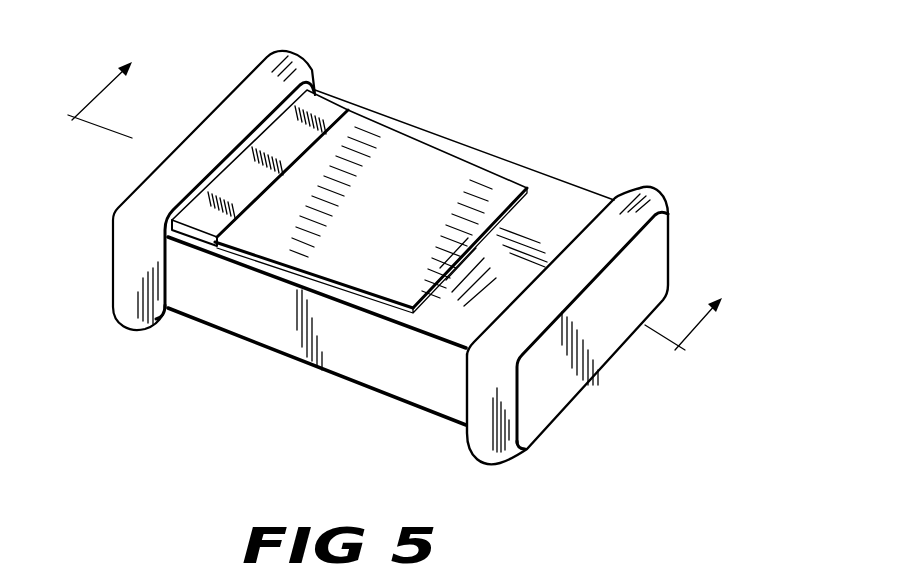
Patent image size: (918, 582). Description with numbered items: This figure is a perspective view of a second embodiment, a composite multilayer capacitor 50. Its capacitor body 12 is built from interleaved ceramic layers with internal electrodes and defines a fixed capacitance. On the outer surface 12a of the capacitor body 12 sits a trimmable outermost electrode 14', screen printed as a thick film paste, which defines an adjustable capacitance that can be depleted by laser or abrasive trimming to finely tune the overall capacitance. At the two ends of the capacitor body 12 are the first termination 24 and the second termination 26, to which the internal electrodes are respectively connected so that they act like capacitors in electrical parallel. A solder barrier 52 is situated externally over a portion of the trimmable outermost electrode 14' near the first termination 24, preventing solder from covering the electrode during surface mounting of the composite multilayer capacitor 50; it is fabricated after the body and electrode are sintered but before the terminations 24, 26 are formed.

The composite multilayer capacitor 50 is at (550, 84).
The capacitor body 12 is at (392, 257).
The outer surface 12a is at (567, 200).
The trimmable outermost electrode 14' is at (371, 187).
The solder barrier 52 is at (334, 106).
The first termination 24 is at (127, 312).
The second termination 26 is at (490, 447).